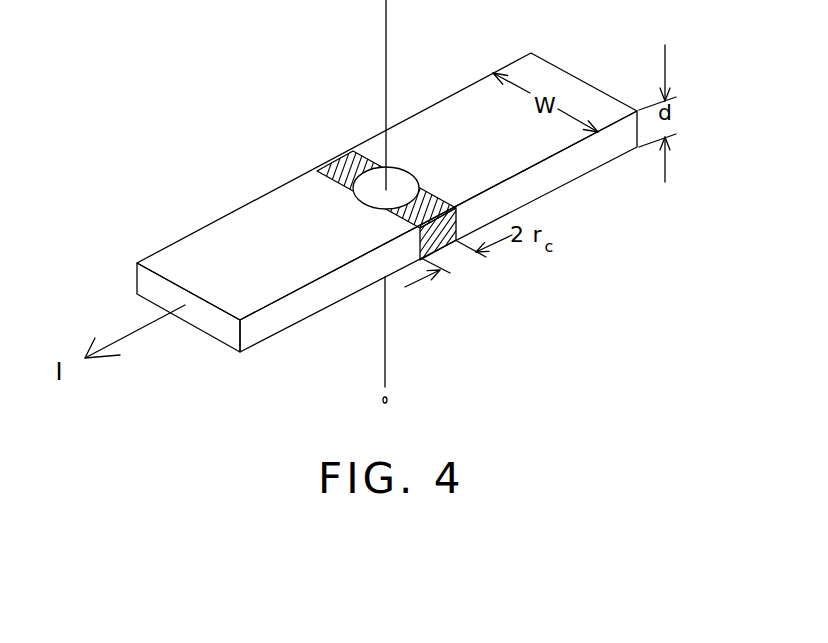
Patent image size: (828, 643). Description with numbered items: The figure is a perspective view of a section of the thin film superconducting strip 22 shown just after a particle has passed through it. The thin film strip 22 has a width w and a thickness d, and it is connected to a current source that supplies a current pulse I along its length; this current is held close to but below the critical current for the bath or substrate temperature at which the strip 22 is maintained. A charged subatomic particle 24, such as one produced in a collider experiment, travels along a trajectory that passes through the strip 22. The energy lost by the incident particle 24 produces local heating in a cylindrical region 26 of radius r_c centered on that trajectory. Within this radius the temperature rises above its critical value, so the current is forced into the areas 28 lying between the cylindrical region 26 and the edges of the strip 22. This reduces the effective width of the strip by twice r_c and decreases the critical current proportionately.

The thin film strip 22 is at (268, 213).
The charged subatomic particle 24 is at (388, 400).
The cylindrical region 26 is at (400, 178).
The areas 28 is at (347, 167).